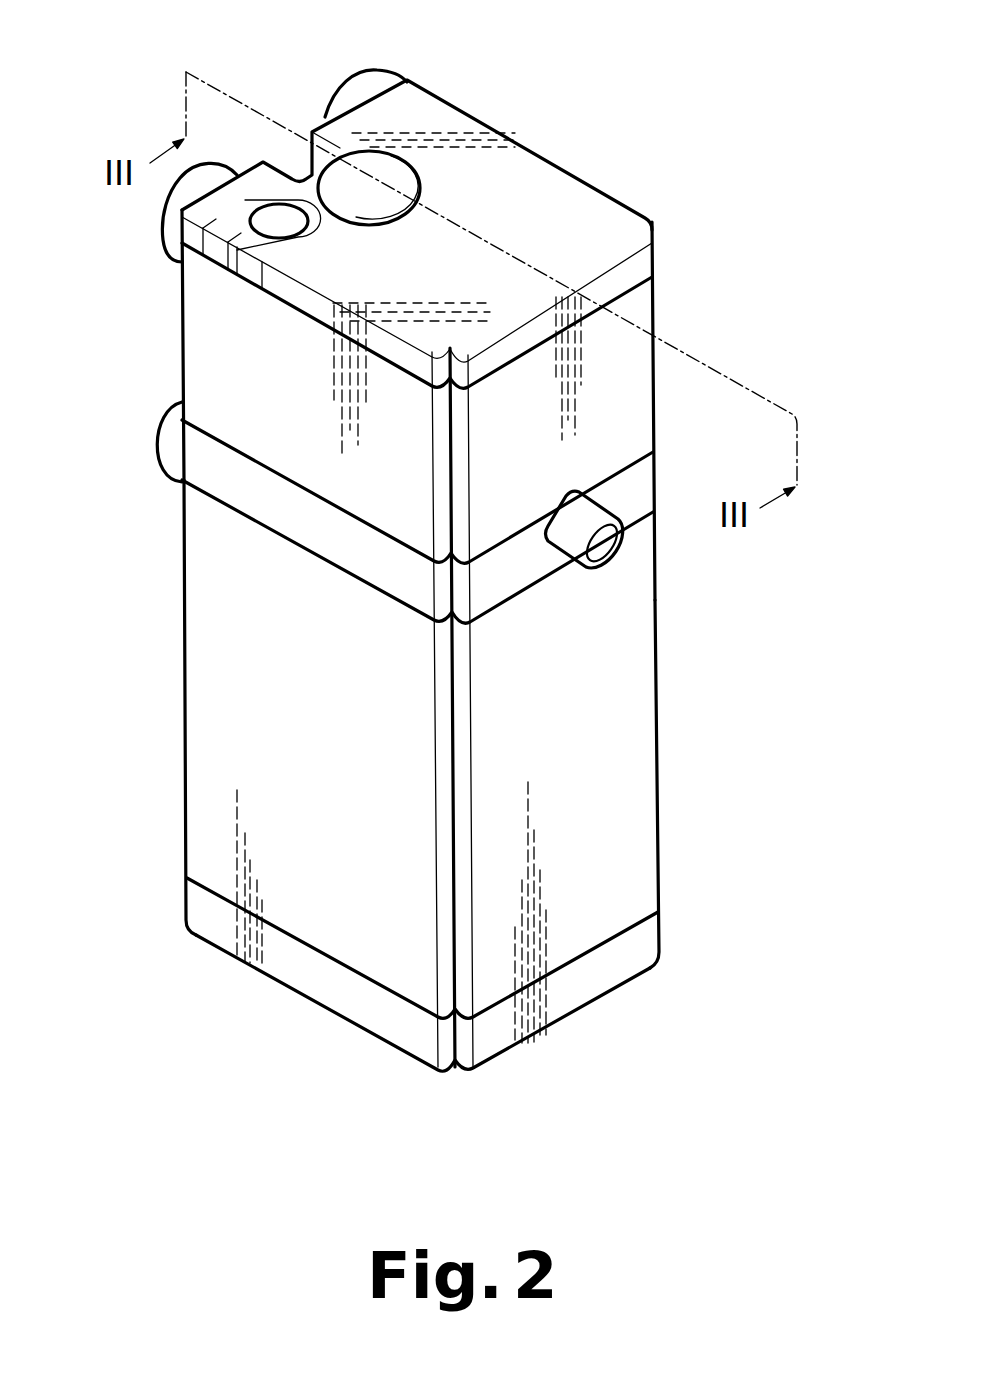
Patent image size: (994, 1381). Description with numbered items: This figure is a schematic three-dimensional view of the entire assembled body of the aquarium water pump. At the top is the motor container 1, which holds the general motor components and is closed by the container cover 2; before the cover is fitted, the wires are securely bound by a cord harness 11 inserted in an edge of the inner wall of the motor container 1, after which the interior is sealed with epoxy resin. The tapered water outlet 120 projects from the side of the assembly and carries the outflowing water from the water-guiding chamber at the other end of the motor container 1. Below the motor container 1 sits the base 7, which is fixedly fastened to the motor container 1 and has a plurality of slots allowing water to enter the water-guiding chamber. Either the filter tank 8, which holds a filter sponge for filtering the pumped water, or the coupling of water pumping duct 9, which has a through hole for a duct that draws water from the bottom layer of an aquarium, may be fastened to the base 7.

The motor container 1 is at (628, 347).
The container cover 2 is at (522, 160).
The base 7 is at (237, 482).
The filter tank 8 is at (210, 740).
The coupling of water pumping duct 9 is at (288, 972).
The cord harness 11 is at (178, 257).
The tapered water outlet 120 is at (608, 543).